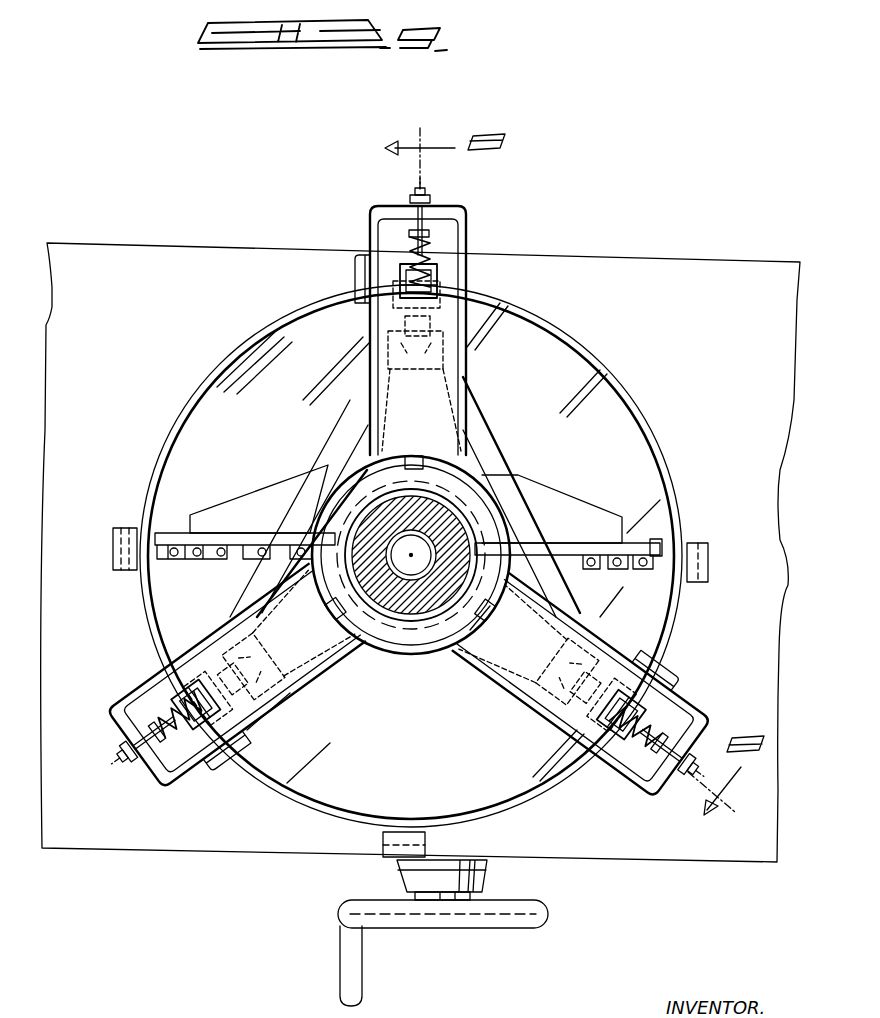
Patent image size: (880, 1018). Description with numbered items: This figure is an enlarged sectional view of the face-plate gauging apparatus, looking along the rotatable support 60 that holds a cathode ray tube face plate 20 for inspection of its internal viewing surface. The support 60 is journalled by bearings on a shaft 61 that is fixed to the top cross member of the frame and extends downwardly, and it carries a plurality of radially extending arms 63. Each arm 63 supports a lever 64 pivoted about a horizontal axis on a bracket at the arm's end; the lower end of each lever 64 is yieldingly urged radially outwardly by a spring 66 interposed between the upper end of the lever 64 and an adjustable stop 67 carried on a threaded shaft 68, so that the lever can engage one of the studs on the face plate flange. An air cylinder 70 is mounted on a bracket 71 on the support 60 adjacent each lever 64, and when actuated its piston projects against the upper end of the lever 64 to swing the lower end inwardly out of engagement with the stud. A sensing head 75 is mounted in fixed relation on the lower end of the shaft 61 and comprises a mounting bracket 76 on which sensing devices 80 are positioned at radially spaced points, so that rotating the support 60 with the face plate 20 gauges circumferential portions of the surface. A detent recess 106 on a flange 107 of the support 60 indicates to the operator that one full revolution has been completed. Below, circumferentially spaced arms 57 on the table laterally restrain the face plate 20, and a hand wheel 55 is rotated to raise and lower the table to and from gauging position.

The face plate 20 is at (628, 373).
The hand wheel 55 is at (466, 920).
The arms 57 is at (118, 536).
The support 60 is at (478, 247).
The shaft 61 is at (388, 573).
The radially extending arms 63 is at (376, 231).
The lever 64 is at (428, 283).
The spring 66 is at (430, 262).
The adjustable stop 67 is at (412, 232).
The threaded shaft 68 is at (430, 193).
The air cylinder 70 is at (388, 341).
The bracket 71 is at (356, 418).
The sensing head 75 is at (598, 502).
The mounting bracket 76 is at (548, 497).
The sensing devices 80 is at (660, 546).
The detent recess 106 is at (436, 430).
The flange 107 is at (356, 476).